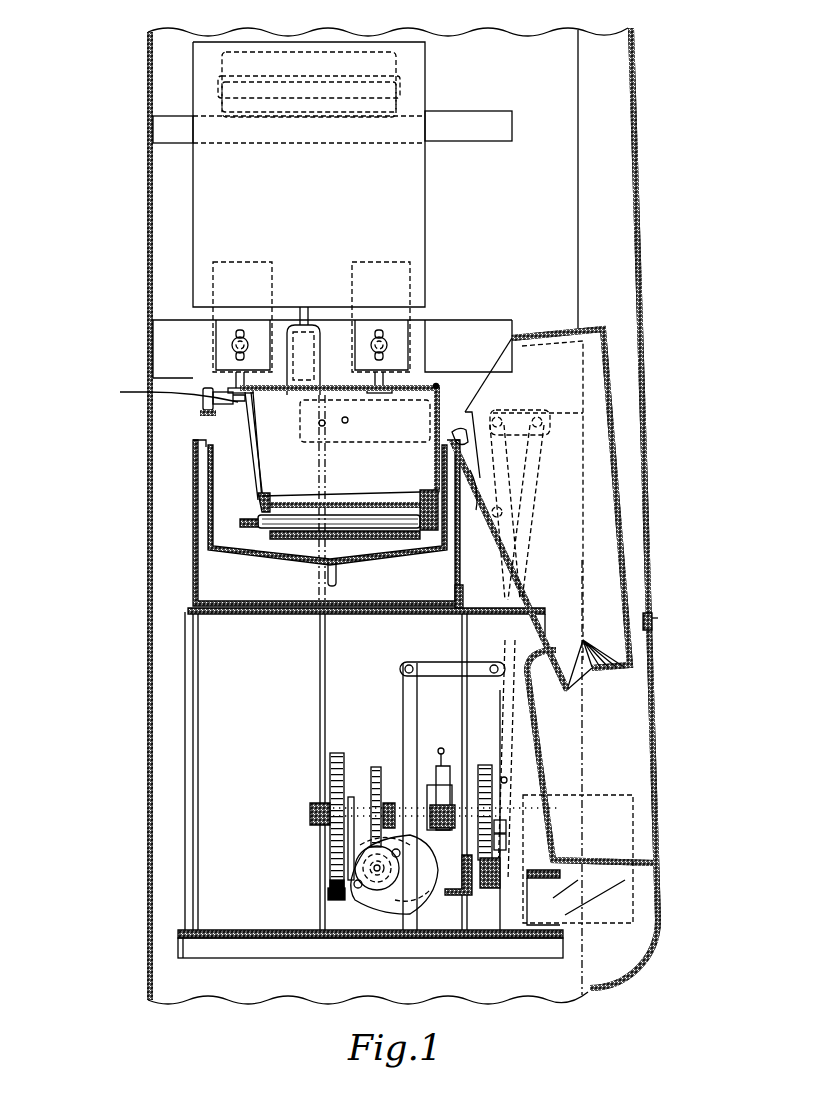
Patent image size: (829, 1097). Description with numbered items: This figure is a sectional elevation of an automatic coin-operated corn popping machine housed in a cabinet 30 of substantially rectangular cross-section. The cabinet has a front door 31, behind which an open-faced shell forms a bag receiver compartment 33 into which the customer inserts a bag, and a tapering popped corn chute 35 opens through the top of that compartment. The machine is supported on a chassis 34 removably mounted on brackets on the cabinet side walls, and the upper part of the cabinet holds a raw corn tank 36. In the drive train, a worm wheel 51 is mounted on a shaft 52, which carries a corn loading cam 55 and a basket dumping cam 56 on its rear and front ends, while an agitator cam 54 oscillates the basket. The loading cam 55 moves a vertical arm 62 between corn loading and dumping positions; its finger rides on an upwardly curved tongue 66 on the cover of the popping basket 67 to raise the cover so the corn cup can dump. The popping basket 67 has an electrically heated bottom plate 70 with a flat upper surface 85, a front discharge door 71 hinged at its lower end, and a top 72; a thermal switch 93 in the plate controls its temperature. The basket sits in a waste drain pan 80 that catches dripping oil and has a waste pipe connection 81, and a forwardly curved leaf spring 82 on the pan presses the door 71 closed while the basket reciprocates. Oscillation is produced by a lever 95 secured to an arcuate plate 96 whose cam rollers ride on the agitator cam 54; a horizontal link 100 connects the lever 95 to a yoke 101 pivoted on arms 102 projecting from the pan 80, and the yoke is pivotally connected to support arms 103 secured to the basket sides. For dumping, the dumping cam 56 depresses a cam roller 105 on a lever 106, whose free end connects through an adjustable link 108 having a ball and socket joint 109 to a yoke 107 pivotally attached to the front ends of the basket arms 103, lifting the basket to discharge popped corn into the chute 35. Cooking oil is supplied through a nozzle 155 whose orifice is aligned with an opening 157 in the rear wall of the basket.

The cabinet 30 is at (148, 214).
The front door 31 is at (646, 355).
The bag receiver compartment 33 is at (593, 748).
The chassis 34 is at (510, 938).
The popped corn chute 35 is at (618, 502).
The raw corn tank 36 is at (415, 207).
The worm wheel 51 is at (376, 766).
The shaft 52 is at (350, 797).
The agitator cam 54 is at (330, 893).
The corn loading cam 55 is at (338, 752).
The basket dumping cam 56 is at (485, 764).
The vertical arm 62 is at (320, 677).
The tongue 66 is at (292, 345).
The popping basket 67 is at (254, 472).
The bottom plate 70 is at (385, 540).
The front discharge door 71 is at (432, 446).
The top 72 is at (418, 386).
The waste drain pan 80 is at (270, 545).
The waste pipe connection 81 is at (337, 577).
The leaf spring 82 is at (452, 428).
The upper surface 85 is at (345, 500).
The thermal switch 93 is at (262, 524).
The lever 95 is at (405, 690).
The arcuate plate 96 is at (375, 897).
The horizontal link 100 is at (440, 662).
The yoke 101 is at (505, 566).
The arms 102 is at (472, 500).
The support arms 103 is at (502, 412).
The cam roller 105 is at (492, 884).
The lever 106 is at (472, 896).
The yoke 107 is at (507, 714).
The adjustable link 108 is at (506, 824).
The ball and socket joint 109 is at (506, 842).
The nozzle 155 is at (161, 392).
The opening 157 is at (245, 398).